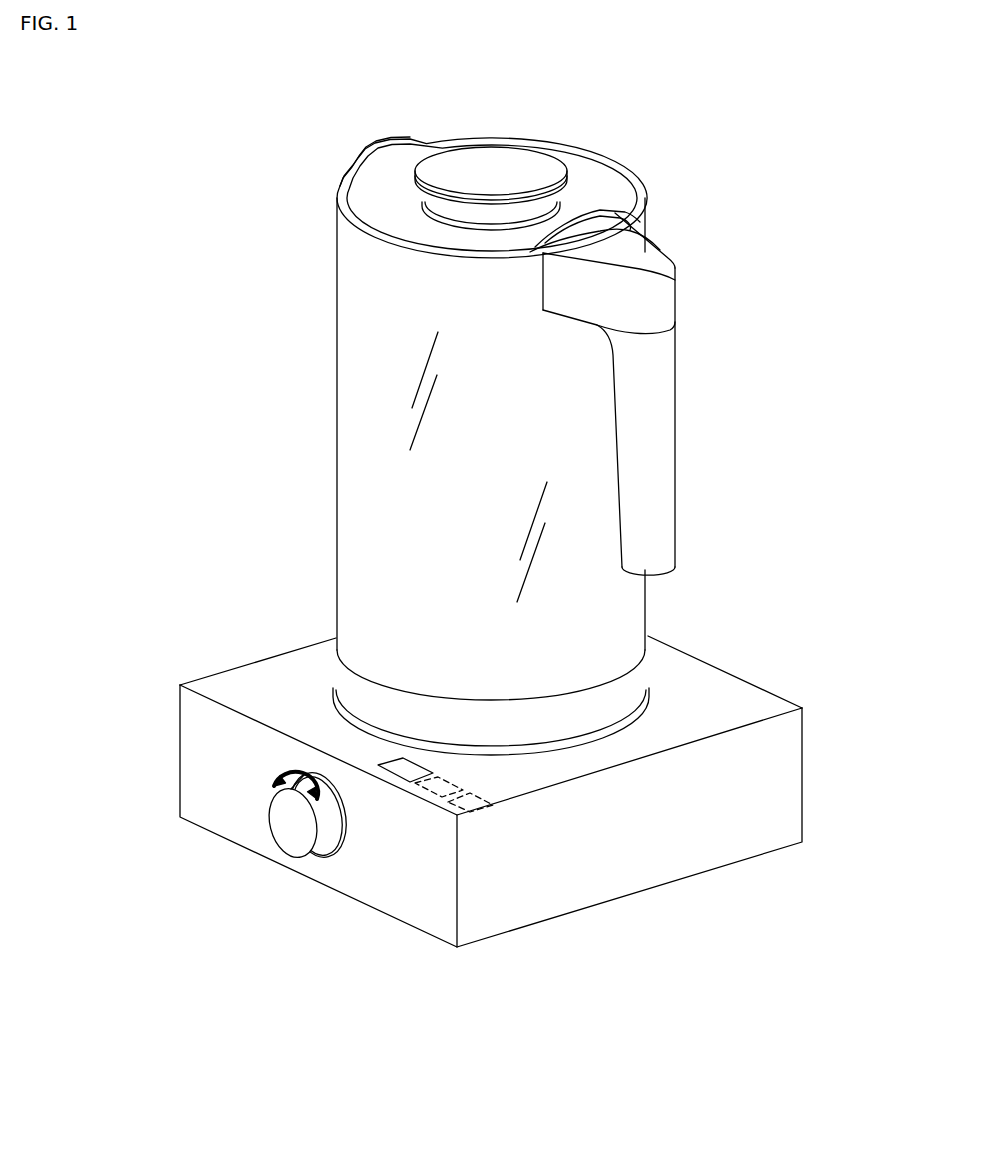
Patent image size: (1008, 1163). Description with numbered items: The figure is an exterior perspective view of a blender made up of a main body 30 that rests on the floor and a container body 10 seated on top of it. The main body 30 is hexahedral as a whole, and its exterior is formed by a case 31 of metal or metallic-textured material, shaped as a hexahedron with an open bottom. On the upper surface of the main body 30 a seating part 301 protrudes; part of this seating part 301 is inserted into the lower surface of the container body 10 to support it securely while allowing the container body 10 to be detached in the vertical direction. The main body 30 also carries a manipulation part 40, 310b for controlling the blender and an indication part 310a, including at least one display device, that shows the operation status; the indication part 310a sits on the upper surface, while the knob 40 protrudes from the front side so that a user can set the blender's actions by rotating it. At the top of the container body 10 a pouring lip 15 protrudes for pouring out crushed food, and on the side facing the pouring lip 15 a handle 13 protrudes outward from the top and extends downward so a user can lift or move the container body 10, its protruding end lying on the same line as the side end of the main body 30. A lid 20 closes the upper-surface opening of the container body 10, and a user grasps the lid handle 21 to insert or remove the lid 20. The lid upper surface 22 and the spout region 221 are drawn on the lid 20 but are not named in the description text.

The container body 10 is at (337, 407).
The handle 13 is at (677, 432).
The pouring lip 15 is at (374, 143).
The lid 20 is at (587, 160).
The lid handle 21 is at (488, 155).
The lid upper surface 22 is at (376, 198).
The discharge spout 221 is at (590, 207).
The main body 30 is at (542, 791).
The case 31 is at (762, 708).
The seating part 301 is at (603, 698).
The indication part 310a is at (390, 760).
The manipulation part 310b is at (438, 806).
The knob 40 is at (278, 815).